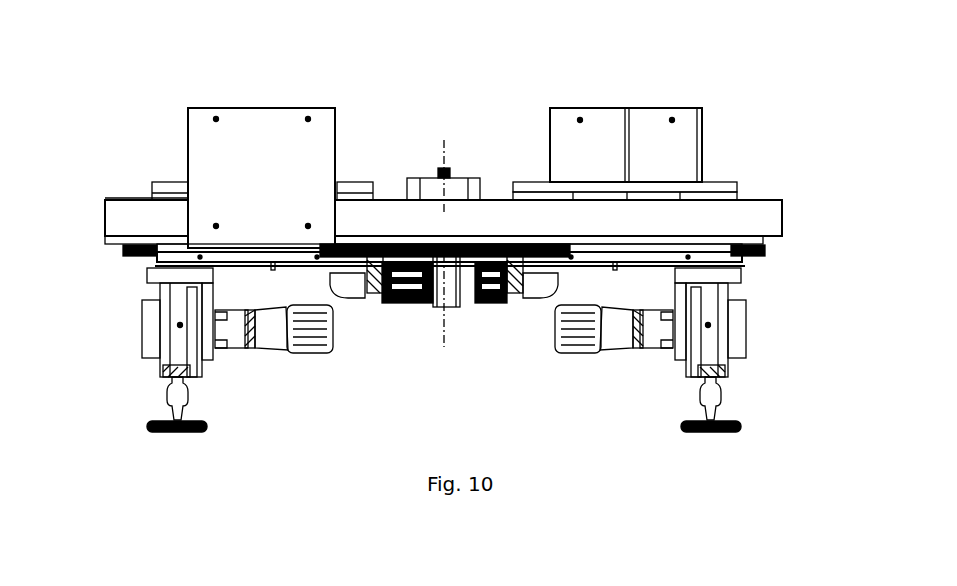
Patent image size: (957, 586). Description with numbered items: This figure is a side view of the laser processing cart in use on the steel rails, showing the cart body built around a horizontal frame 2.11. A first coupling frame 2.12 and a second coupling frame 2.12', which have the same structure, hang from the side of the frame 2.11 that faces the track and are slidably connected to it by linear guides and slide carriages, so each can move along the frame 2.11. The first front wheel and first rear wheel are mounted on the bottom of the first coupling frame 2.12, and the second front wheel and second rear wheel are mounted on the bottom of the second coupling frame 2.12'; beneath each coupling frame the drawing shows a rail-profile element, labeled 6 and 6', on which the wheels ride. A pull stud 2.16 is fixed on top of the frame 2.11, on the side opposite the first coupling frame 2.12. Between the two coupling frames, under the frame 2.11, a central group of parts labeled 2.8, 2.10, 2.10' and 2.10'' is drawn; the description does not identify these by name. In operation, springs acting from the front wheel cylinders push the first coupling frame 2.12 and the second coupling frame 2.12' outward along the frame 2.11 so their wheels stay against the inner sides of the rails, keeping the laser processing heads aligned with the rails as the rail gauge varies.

The frame 2.11 is at (420, 185).
The pull stud 2.16 is at (471, 124).
The first coupling frame 2.12 is at (200, 319).
The rail wheel 6 is at (143, 398).
The bearing bracket 2.10 is at (340, 339).
The drive motor 2.8 is at (410, 339).
The bearing bracket 2.10' is at (471, 343).
The bearing bracket 2.10'' is at (543, 339).
The second coupling frame 2.12' is at (706, 319).
The rail wheel 6' is at (758, 398).